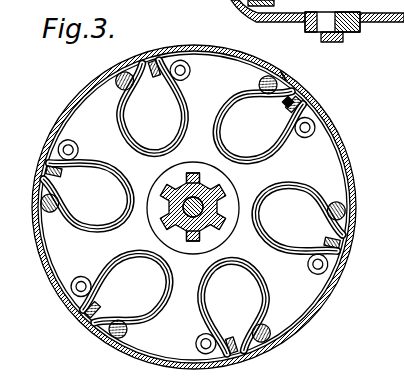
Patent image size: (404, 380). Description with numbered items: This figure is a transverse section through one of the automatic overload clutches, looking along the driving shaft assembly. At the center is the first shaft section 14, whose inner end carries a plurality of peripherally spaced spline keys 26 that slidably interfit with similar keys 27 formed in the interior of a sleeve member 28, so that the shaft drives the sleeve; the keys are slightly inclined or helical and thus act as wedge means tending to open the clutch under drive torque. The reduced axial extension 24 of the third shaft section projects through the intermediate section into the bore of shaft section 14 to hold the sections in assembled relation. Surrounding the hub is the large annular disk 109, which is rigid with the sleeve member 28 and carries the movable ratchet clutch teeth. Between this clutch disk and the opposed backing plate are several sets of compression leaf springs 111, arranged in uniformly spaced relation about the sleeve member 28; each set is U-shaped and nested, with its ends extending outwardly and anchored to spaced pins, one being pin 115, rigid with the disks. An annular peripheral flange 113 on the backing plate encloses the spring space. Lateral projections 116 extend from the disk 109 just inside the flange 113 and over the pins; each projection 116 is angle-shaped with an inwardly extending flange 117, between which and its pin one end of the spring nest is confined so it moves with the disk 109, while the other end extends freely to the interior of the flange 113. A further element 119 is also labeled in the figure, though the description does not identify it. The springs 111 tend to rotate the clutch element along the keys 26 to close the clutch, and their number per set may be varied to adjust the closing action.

The first shaft section 14 is at (218, 200).
The reduced axial extension 24 is at (194, 242).
The spline keys 26 is at (196, 168).
The keys 27 is at (173, 172).
The sleeve member 28 is at (228, 186).
The annular disk 109 is at (237, 63).
The compression leaf springs 111 is at (185, 108).
The annular peripheral flange 113 is at (277, 79).
The pin 115 is at (276, 86).
The lateral projections 116 is at (328, 127).
The inwardly extending flange 117 is at (288, 103).
The ring 119 is at (312, 118).